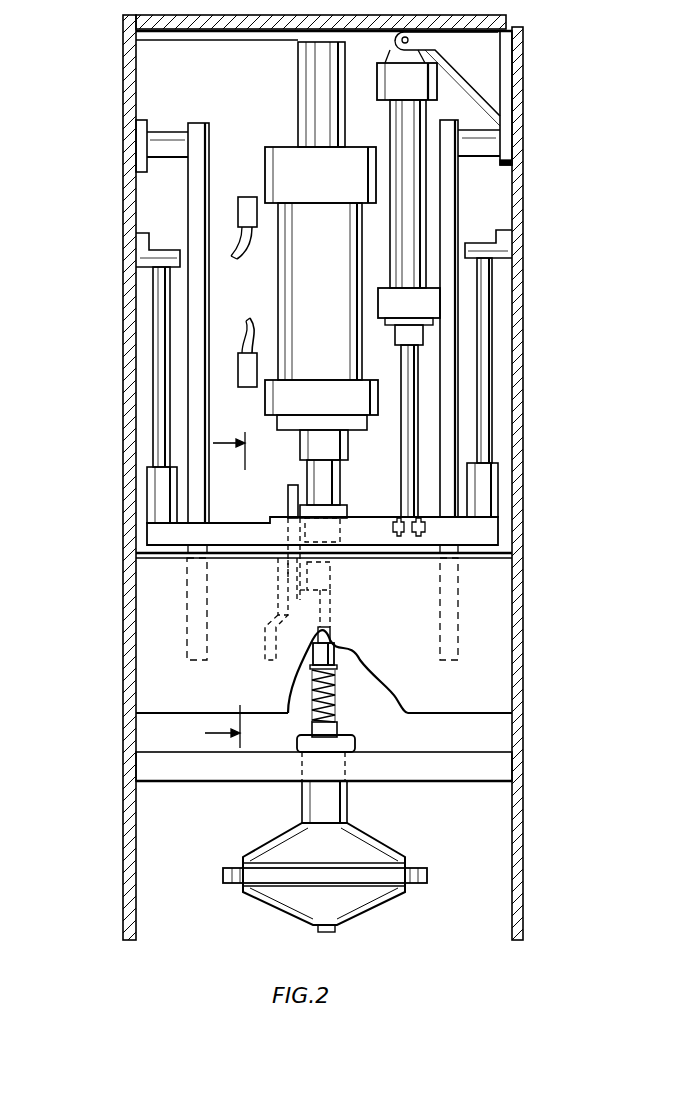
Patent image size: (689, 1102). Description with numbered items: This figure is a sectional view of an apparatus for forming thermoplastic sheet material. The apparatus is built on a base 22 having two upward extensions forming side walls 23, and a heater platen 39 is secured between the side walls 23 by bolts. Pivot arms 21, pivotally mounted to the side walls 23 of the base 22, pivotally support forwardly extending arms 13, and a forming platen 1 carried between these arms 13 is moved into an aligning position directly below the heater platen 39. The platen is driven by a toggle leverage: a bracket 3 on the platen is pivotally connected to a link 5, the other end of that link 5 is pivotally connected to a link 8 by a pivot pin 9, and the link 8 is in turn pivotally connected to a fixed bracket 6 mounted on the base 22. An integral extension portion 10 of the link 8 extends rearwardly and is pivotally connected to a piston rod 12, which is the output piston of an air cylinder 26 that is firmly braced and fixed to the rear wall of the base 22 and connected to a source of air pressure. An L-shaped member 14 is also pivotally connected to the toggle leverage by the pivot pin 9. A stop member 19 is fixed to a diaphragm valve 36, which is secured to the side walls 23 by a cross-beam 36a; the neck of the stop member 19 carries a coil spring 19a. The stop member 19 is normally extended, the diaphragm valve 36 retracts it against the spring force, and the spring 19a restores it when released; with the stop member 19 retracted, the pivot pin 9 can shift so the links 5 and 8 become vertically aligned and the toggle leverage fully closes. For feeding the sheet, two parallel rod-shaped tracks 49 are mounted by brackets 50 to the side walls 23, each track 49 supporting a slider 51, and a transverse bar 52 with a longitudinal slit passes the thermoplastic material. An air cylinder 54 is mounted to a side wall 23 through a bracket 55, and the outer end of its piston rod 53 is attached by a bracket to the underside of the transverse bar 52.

The forming platen 1 is at (478, 612).
The bracket 3 is at (318, 632).
The link 5 is at (334, 580).
The fixed bracket 6 is at (265, 640).
The link 8 is at (278, 600).
The pivot pin 9 is at (325, 558).
The integral extension portion 10 is at (318, 510).
The piston rod 12 is at (320, 478).
The forwardly extending arm 13 is at (193, 192).
The L-shaped member 14 is at (293, 495).
The stop member 19 is at (332, 650).
The coil spring 19a is at (330, 710).
The pivot arm 21 is at (160, 130).
The base 22 is at (105, 610).
The side wall 23 is at (522, 428).
The air cylinder 26 is at (300, 288).
The diaphragm valve 36 is at (270, 900).
The cross-beam 36a is at (500, 767).
The heater platen 39 is at (485, 667).
The rod-shaped track 49 is at (156, 372).
The bracket 50 is at (145, 255).
The slider 51 is at (160, 500).
The transverse bar 52 is at (490, 530).
The piston rod 53 is at (405, 460).
The air cylinder 54 is at (418, 228).
The bracket 55 is at (489, 66).